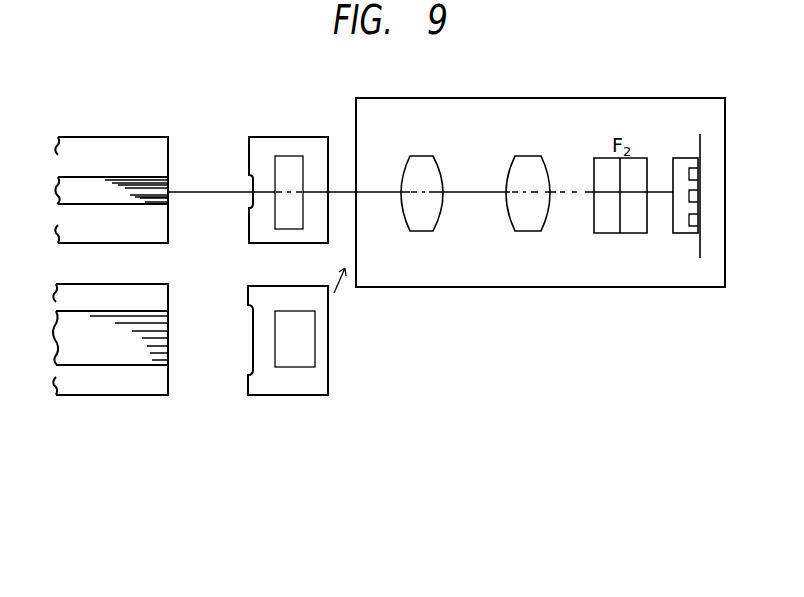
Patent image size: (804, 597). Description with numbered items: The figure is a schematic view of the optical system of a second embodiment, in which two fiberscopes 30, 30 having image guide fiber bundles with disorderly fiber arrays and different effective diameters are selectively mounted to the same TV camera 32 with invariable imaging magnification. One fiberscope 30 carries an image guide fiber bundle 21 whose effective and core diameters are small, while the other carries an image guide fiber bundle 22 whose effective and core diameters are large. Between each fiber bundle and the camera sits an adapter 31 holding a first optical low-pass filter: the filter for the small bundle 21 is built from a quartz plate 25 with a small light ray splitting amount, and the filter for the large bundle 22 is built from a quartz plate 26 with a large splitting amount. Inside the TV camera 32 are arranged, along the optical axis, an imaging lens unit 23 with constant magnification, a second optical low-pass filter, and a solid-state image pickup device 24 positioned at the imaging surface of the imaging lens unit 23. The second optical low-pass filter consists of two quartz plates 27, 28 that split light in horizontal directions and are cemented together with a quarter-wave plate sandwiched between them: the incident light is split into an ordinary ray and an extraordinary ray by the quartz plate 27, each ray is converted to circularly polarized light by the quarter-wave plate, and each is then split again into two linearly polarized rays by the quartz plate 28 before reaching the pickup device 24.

The image guide fiber bundle 21 is at (147, 195).
The image guide fiber bundle 22 is at (145, 354).
The imaging lens unit 23 is at (552, 147).
The solid-state image pickup device 24 is at (686, 233).
The quartz plate 25 is at (292, 217).
The quartz plate 26 is at (302, 360).
The quartz plate 27 is at (607, 233).
The quartz plate 28 is at (636, 233).
The fiberscope 30 is at (134, 136).
The adapter 31 is at (288, 137).
The TV camera 32 is at (668, 98).